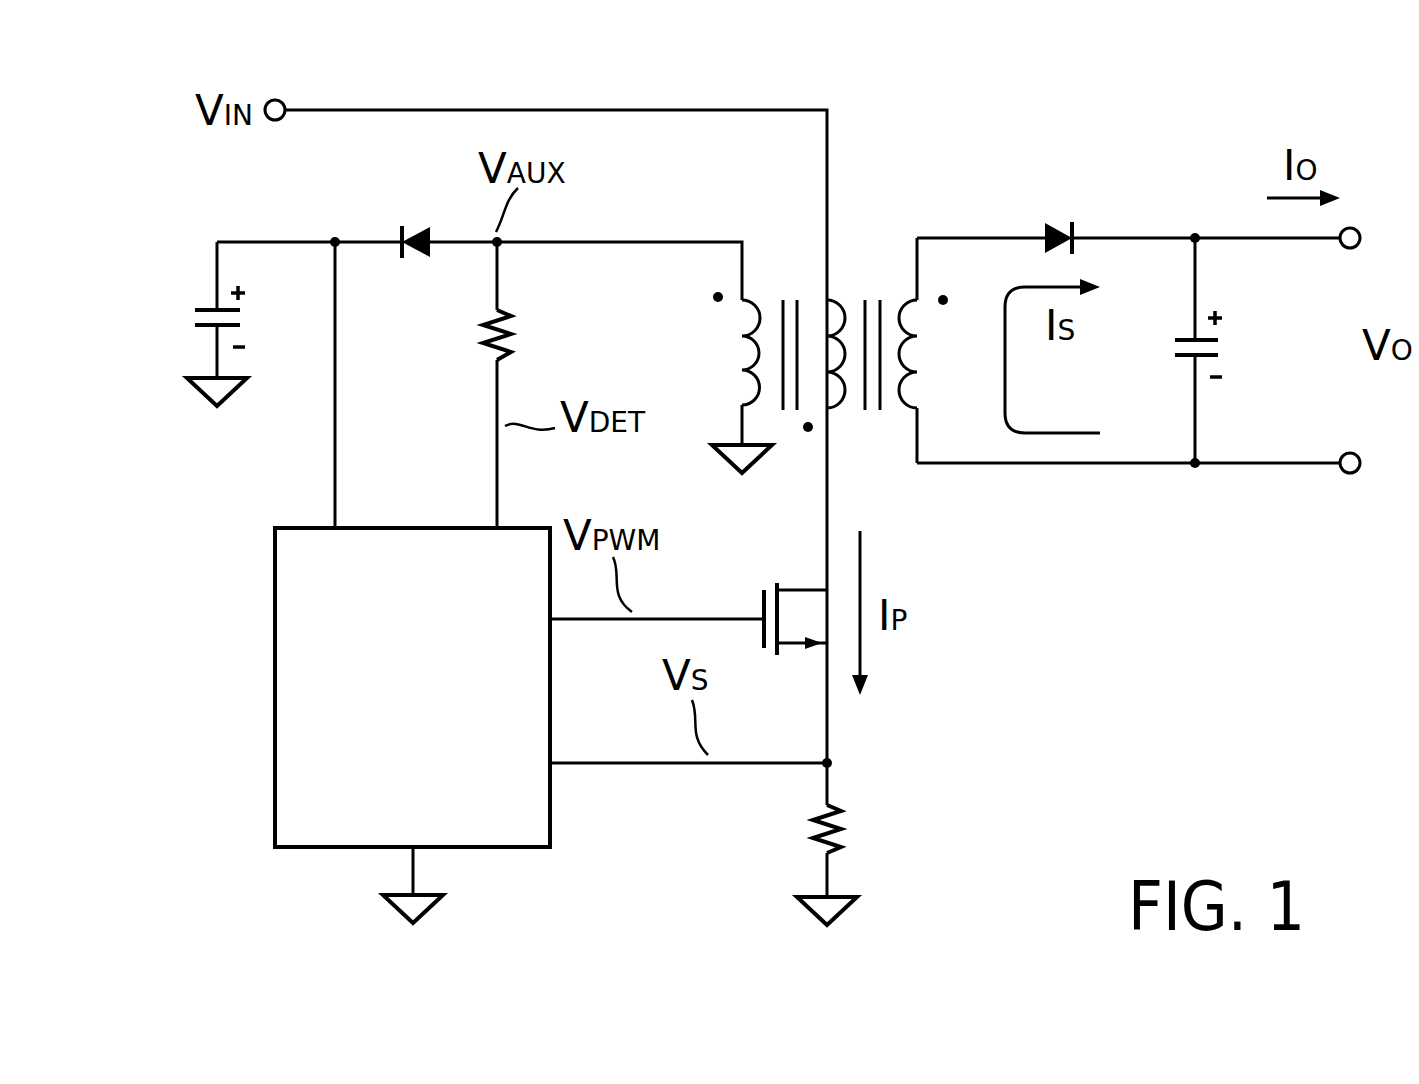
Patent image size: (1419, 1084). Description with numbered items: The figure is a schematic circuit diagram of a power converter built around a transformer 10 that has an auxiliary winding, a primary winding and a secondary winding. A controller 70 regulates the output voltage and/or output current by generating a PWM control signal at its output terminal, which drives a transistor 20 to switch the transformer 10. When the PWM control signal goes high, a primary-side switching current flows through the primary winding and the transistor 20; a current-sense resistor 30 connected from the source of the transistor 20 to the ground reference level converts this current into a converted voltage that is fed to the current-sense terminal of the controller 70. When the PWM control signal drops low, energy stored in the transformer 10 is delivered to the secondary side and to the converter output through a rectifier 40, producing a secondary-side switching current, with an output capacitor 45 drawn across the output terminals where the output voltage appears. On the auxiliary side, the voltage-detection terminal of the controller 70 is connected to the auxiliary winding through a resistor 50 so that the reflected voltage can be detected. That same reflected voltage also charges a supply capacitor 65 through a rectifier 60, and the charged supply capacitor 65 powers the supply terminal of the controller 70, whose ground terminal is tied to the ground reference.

The transformer 10 is at (852, 258).
The transistor 20 is at (760, 585).
The current-sense resistor 30 is at (806, 828).
The rectifier 40 is at (1058, 216).
The output capacitor 45 is at (1230, 350).
The resistor 50 is at (523, 333).
The rectifier 60 is at (419, 272).
The supply capacitor 65 is at (187, 320).
The controller 70 is at (272, 597).